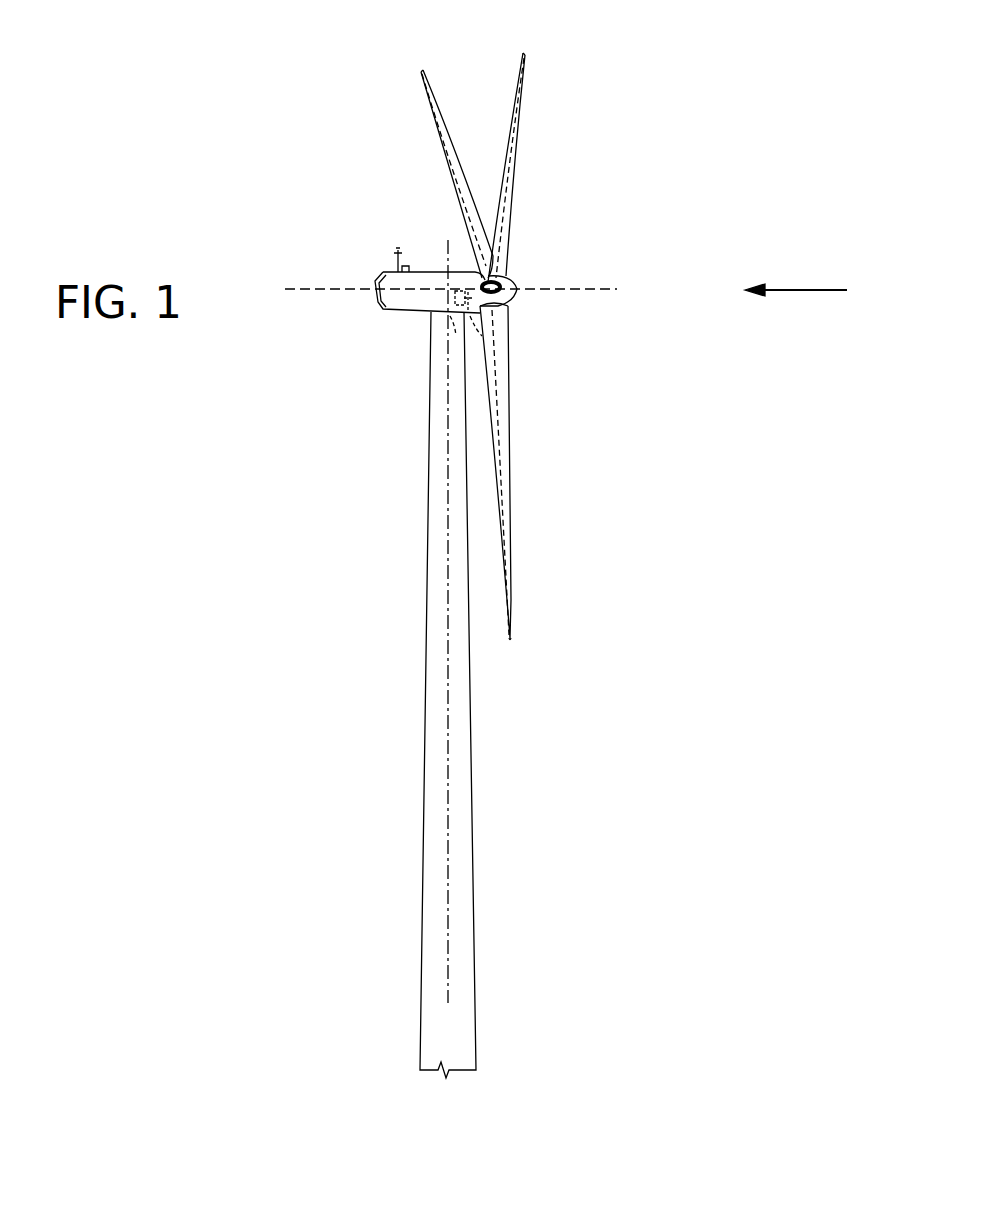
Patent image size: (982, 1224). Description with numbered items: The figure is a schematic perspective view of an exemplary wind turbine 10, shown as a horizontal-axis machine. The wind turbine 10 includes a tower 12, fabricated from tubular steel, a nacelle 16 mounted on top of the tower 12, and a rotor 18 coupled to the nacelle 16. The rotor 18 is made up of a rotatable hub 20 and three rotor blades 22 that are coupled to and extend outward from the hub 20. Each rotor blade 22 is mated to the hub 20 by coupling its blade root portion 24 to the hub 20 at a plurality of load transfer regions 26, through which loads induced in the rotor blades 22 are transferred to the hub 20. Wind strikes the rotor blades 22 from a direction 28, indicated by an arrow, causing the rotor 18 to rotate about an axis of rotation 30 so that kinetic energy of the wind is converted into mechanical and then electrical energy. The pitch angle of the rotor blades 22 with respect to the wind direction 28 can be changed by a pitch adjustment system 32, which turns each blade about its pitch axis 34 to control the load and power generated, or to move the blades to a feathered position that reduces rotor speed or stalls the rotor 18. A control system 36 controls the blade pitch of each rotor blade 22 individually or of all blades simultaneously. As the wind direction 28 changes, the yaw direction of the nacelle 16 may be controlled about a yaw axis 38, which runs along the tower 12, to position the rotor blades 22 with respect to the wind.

The wind turbine 10 is at (210, 83).
The tower 12 is at (424, 840).
The nacelle 16 is at (400, 312).
The rotor 18 is at (522, 195).
The rotatable hub 20 is at (515, 281).
The rotor blade 22 is at (440, 140).
The blade root portion 24 is at (503, 395).
The load transfer regions 26 is at (493, 312).
The direction 28 is at (816, 289).
The axis of rotation 30 is at (580, 291).
The pitch adjustment system 32 is at (482, 336).
The pitch axes 34 is at (418, 78).
The control system 36 is at (450, 316).
The yaw axis 38 is at (449, 732).